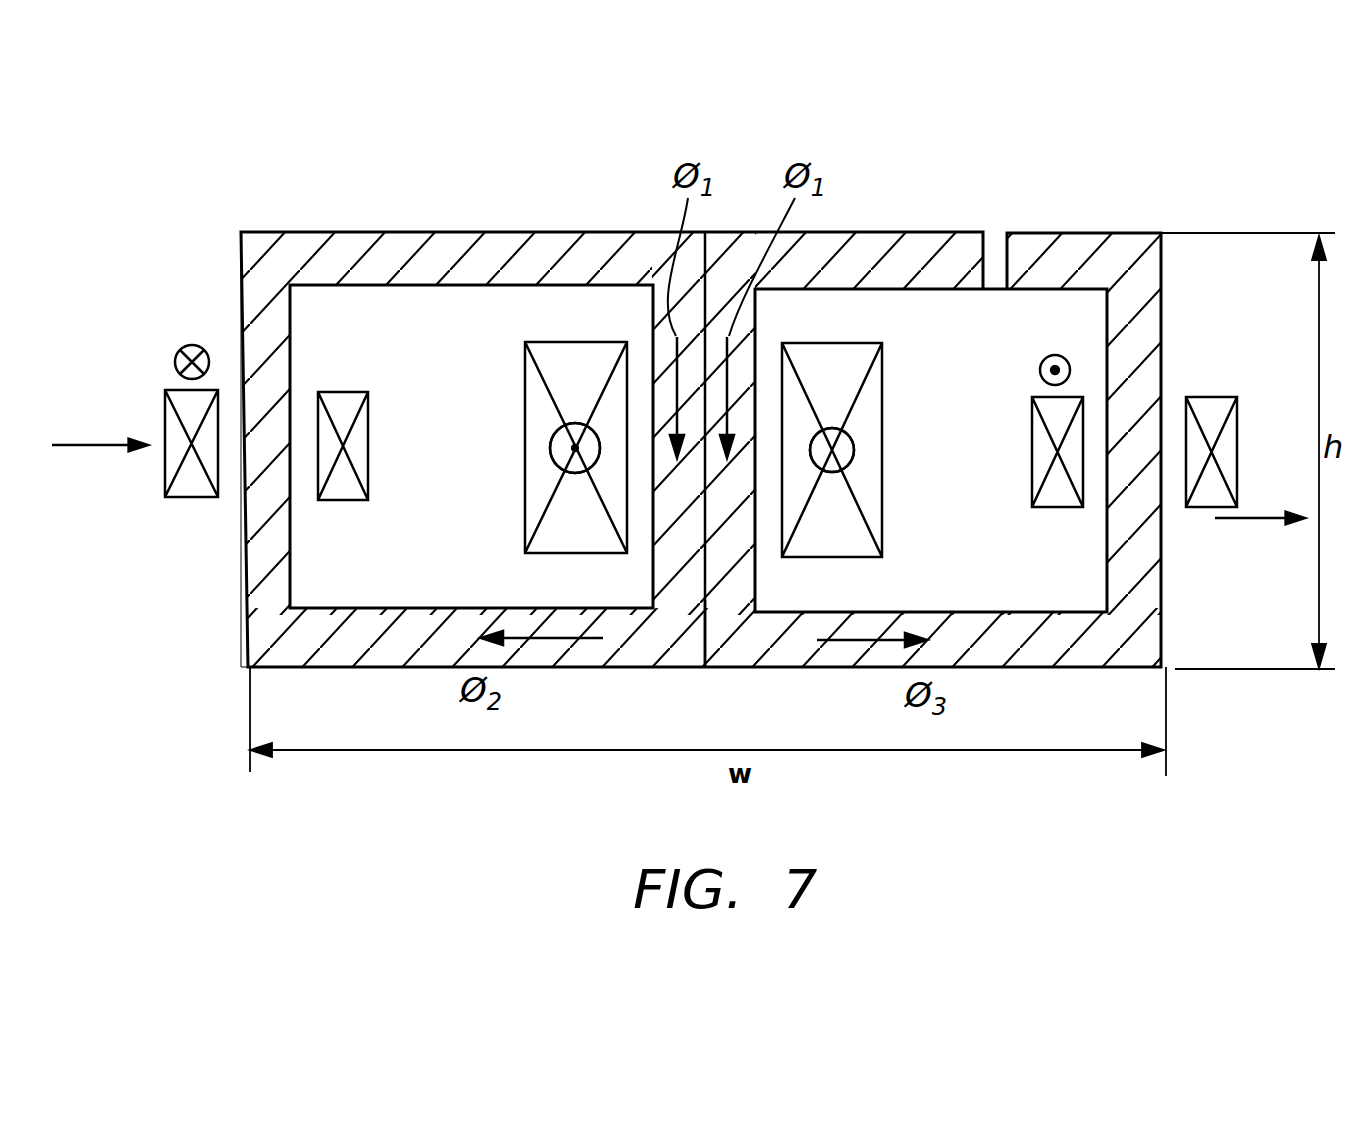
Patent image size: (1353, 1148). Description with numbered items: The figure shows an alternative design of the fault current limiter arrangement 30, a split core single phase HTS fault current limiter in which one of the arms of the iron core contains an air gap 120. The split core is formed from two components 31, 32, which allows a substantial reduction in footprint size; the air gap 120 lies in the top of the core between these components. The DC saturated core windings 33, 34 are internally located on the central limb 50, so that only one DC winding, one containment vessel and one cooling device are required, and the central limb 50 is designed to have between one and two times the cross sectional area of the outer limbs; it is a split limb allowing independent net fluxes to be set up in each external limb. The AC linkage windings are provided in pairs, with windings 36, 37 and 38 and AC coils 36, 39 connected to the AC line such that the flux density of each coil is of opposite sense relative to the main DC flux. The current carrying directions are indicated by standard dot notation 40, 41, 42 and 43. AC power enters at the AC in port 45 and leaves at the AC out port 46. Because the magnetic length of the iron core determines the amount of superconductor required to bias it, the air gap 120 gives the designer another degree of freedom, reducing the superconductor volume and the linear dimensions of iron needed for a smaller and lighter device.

The fault current limiter arrangement 30 is at (1166, 202).
The split core component 31 is at (510, 231).
The split core component 32 is at (1038, 231).
The DC saturated core winding 33 is at (525, 536).
The DC winding 34 is at (840, 558).
The AC linkage winding 36 is at (182, 500).
The first control winding 37 is at (335, 390).
The AC linkage winding 38 is at (1057, 508).
The AC coil 39 is at (1212, 396).
The dot notation 40 is at (190, 344).
The dot notation 41 is at (553, 436).
The dot notation 42 is at (850, 430).
The dot notation 43 is at (1072, 372).
The AC in port 45 is at (80, 448).
The AC out port 46 is at (1260, 514).
The central limb 50 is at (728, 688).
The air gap 120 is at (994, 230).